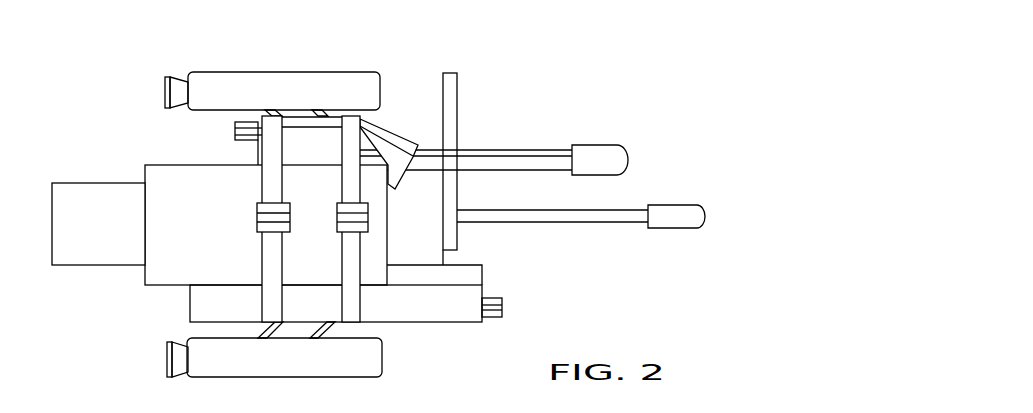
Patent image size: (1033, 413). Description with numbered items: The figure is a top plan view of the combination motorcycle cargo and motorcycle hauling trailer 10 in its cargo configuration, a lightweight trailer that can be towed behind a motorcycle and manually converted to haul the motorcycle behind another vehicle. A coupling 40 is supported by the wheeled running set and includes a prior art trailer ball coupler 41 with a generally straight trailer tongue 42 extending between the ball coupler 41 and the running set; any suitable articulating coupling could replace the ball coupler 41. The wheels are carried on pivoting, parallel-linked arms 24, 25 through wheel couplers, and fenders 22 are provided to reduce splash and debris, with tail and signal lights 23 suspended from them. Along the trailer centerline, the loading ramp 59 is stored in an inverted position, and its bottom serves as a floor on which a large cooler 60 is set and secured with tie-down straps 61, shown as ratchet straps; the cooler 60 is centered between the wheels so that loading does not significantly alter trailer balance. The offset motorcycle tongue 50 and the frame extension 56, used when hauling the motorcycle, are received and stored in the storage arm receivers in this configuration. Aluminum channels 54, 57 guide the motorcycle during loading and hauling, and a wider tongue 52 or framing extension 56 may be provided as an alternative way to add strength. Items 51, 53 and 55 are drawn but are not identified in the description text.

The combination motorcycle cargo and motorcycle hauling trailer 10 is at (636, 62).
The fender 22 is at (253, 102).
The tail and signal light 23 is at (165, 88).
The pivoting parallel-linked arm 24 is at (263, 332).
The pivoting parallel-linked arm 25 is at (340, 328).
The coupling 40 is at (590, 224).
The trailer ball coupler 41 is at (678, 210).
The trailer tongue 42 is at (505, 222).
The offset motorcycle tongue 50 is at (510, 136).
The handle grip 51 is at (612, 150).
The tongue 52 is at (493, 150).
The cross bar 53 is at (456, 83).
The aluminum channel 54 is at (388, 125).
The connector 55 is at (242, 135).
The frame extension 56 is at (503, 303).
The aluminum channel 57 is at (455, 314).
The loading ramp 59 is at (102, 236).
The cooler 60 is at (212, 236).
The tie-down straps 61 is at (273, 122).